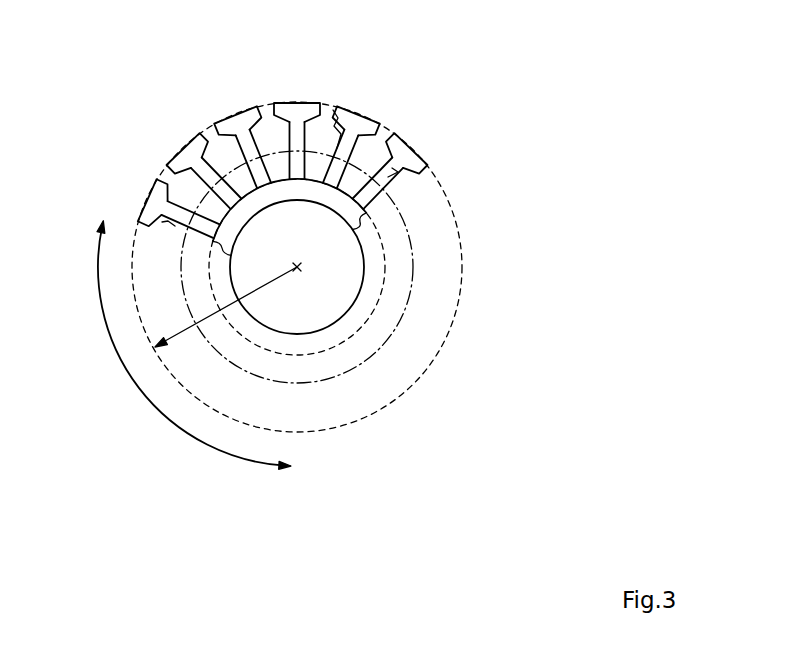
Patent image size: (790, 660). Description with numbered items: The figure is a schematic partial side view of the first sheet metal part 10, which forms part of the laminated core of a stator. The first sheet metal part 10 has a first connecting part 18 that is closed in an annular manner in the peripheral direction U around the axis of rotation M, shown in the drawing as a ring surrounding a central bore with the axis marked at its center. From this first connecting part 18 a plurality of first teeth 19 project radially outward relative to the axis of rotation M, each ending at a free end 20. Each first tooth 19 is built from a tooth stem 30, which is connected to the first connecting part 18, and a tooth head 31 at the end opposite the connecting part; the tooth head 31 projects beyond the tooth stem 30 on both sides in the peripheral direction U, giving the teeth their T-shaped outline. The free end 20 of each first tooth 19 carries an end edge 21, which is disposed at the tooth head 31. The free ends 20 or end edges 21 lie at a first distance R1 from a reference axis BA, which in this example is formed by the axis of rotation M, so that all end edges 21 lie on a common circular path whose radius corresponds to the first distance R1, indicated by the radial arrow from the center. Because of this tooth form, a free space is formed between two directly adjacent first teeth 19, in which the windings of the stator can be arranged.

The first sheet metal part 10 is at (492, 62).
The first connecting part 18 is at (368, 220).
The first tooth 19 is at (262, 165).
The free end 20 is at (287, 143).
The end edge 21 is at (347, 112).
The tooth stem 30 is at (296, 130).
The tooth head 31 is at (286, 106).
The reference axis BA is at (426, 294).
The axis of rotation M is at (297, 267).
The first distance R1 is at (255, 293).
The peripheral direction U is at (135, 388).